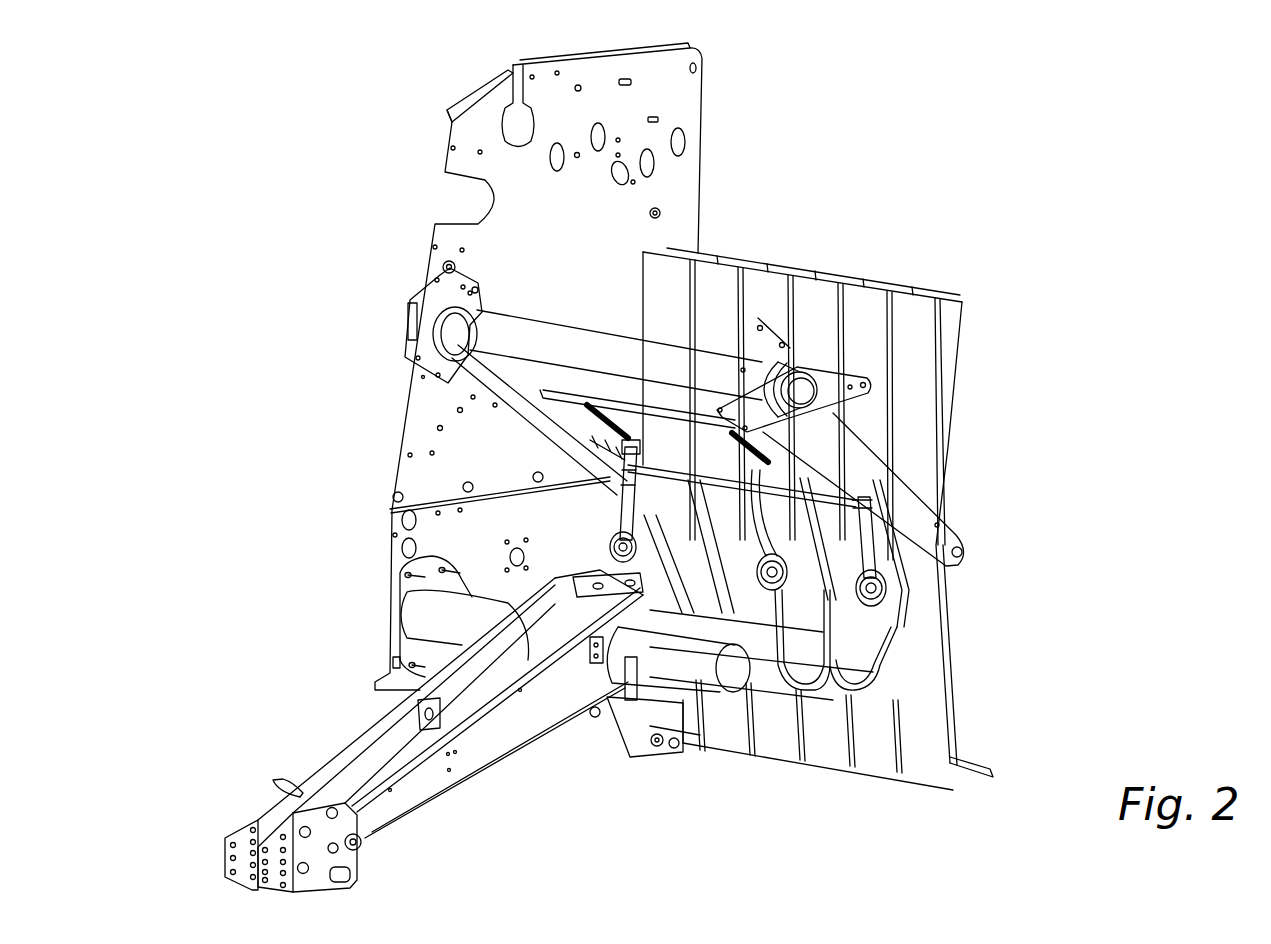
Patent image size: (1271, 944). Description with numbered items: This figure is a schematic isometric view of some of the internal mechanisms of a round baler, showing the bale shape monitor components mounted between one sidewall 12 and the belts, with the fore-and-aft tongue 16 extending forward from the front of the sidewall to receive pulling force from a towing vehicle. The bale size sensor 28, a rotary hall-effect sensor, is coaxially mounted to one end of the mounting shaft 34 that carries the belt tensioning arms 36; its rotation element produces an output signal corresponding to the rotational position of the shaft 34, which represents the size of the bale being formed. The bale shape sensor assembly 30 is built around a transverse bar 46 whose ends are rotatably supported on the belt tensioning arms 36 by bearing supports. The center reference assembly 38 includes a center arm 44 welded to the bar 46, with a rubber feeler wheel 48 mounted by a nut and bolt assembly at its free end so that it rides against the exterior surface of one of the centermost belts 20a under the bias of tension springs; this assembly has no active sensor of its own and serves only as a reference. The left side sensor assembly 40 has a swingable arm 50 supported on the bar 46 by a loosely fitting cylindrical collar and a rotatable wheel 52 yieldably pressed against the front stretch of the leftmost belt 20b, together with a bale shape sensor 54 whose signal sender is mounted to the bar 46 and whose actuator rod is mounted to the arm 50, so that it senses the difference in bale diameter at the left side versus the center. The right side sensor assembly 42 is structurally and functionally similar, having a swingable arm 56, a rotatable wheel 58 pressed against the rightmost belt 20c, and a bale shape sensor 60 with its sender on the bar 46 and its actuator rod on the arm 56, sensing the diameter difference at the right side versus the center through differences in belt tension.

The sidewall 12 is at (689, 126).
The tongue 16 is at (363, 740).
The centermost belt 20a is at (820, 296).
The leftmost belt 20b is at (925, 315).
The rightmost belt 20c is at (675, 276).
The bale size sensor 28 is at (440, 328).
The bale shape sensor assembly 30 is at (840, 600).
The mounting shaft 34 is at (438, 356).
The belt tensioning arms 36 is at (498, 381).
The center reference assembly 38 is at (803, 580).
The left side sensor assembly 40 is at (948, 570).
The right side sensor assembly 42 is at (602, 512).
The center arm 44 is at (767, 533).
The transverse bar 46 is at (720, 481).
The feeler wheel 48 is at (760, 580).
The swingable arm 50 is at (904, 554).
The rotatable wheel 52 is at (880, 597).
The bale shape sensor 54 is at (853, 519).
The swingable arm 56 is at (633, 513).
The rotatable wheel 58 is at (640, 552).
The bale shape sensor 60 is at (670, 448).